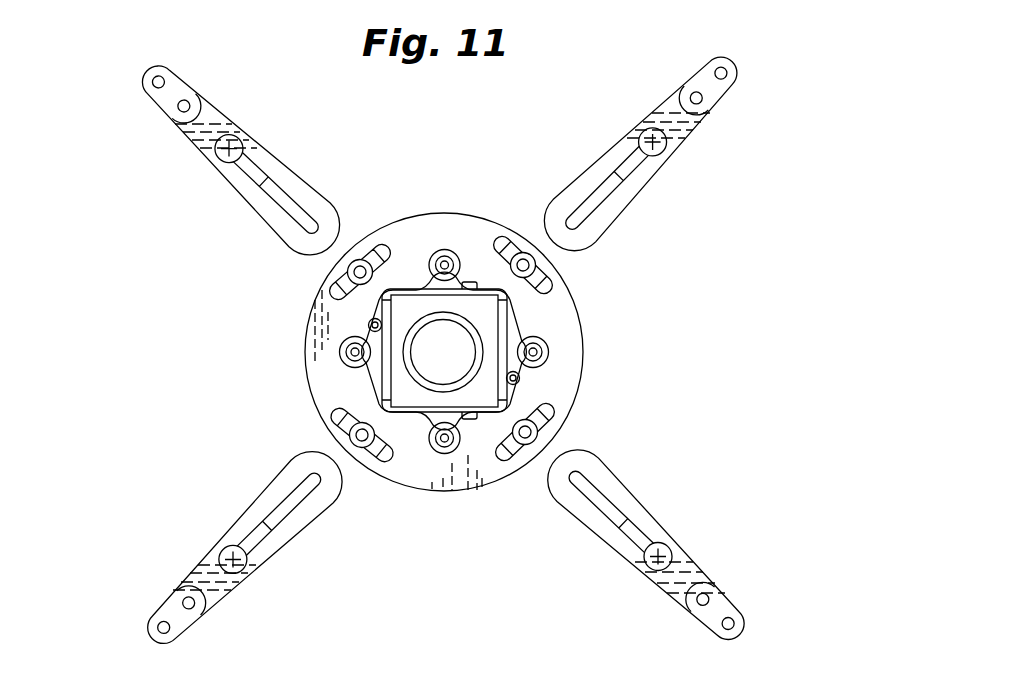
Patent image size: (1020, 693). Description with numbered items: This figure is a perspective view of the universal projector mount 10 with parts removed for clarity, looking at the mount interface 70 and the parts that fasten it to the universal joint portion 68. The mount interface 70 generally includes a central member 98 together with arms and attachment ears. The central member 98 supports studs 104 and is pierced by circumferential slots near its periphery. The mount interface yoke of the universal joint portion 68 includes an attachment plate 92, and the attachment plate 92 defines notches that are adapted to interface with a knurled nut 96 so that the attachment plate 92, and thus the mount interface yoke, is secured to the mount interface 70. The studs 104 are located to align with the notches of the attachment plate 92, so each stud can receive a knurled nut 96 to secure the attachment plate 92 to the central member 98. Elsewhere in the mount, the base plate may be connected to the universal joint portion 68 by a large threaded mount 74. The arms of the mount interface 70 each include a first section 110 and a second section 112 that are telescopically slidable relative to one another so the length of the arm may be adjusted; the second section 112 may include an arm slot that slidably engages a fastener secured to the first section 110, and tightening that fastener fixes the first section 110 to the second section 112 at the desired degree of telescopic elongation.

The universal projector mount 10 is at (294, 76).
The universal joint portion 68 is at (503, 313).
The mount interface 70 is at (457, 217).
The large threaded mount 74 is at (418, 327).
The attachment plate 92 is at (423, 423).
The knurled nut 96 is at (445, 262).
The central member 98 is at (432, 482).
The studs 104 is at (455, 255).
The first section 110 is at (280, 224).
The second section 112 is at (157, 94).